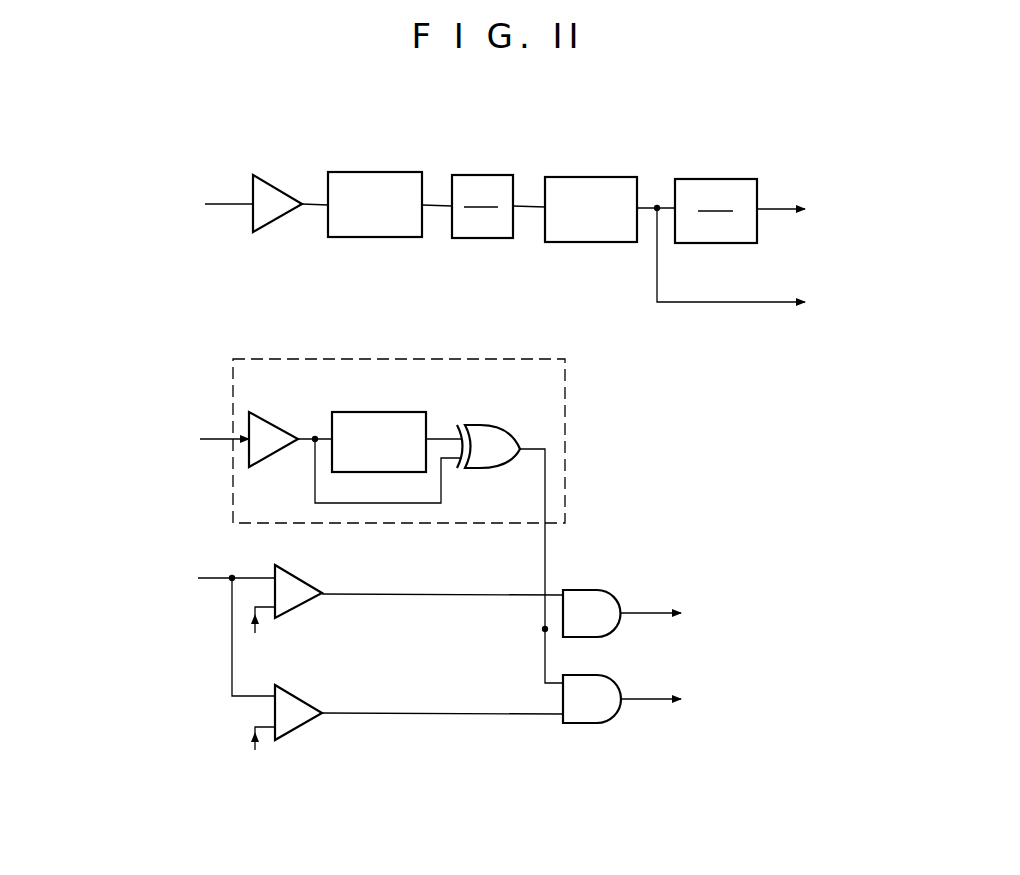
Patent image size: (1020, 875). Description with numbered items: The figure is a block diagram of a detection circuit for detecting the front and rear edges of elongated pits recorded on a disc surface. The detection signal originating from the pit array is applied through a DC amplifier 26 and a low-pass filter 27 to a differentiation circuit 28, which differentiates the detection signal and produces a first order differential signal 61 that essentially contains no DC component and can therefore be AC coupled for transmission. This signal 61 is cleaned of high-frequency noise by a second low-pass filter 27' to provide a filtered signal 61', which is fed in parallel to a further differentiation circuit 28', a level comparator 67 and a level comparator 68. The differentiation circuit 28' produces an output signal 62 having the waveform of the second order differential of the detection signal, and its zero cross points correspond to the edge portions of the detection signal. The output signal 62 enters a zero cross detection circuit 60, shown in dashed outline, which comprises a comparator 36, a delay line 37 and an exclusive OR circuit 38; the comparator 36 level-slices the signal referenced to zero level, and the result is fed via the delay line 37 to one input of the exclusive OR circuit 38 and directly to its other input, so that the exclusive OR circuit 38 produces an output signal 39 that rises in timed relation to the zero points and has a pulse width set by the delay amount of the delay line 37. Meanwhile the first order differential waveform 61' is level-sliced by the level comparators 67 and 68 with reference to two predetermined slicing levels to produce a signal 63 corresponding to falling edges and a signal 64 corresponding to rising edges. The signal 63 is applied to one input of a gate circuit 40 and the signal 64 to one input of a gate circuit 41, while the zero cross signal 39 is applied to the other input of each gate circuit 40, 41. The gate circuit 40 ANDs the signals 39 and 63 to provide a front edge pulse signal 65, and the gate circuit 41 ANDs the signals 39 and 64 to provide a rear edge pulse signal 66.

The DC amplifier 26 is at (282, 190).
The low-pass filter 27 is at (375, 174).
The differentiation circuit 28 is at (482, 175).
The first order differential signal 61 is at (531, 172).
The low-pass filter 27' is at (591, 177).
The differentiation circuit 28' is at (716, 178).
The output signal 62 is at (784, 207).
The signal 61' is at (492, 393).
The zero cross detection circuit 60 is at (565, 384).
The comparator 36 is at (288, 429).
The delay line 37 is at (362, 411).
The exclusive OR circuit 38 is at (508, 431).
The output signal 39 is at (544, 498).
The level comparator 67 is at (300, 580).
The level comparator 68 is at (300, 698).
The signal 63 is at (439, 593).
The signal 64 is at (439, 712).
The gate circuit 40 is at (614, 593).
The gate circuit 41 is at (617, 684).
The front edge pulse signal 65 is at (657, 612).
The rear edge pulse signal 66 is at (658, 698).